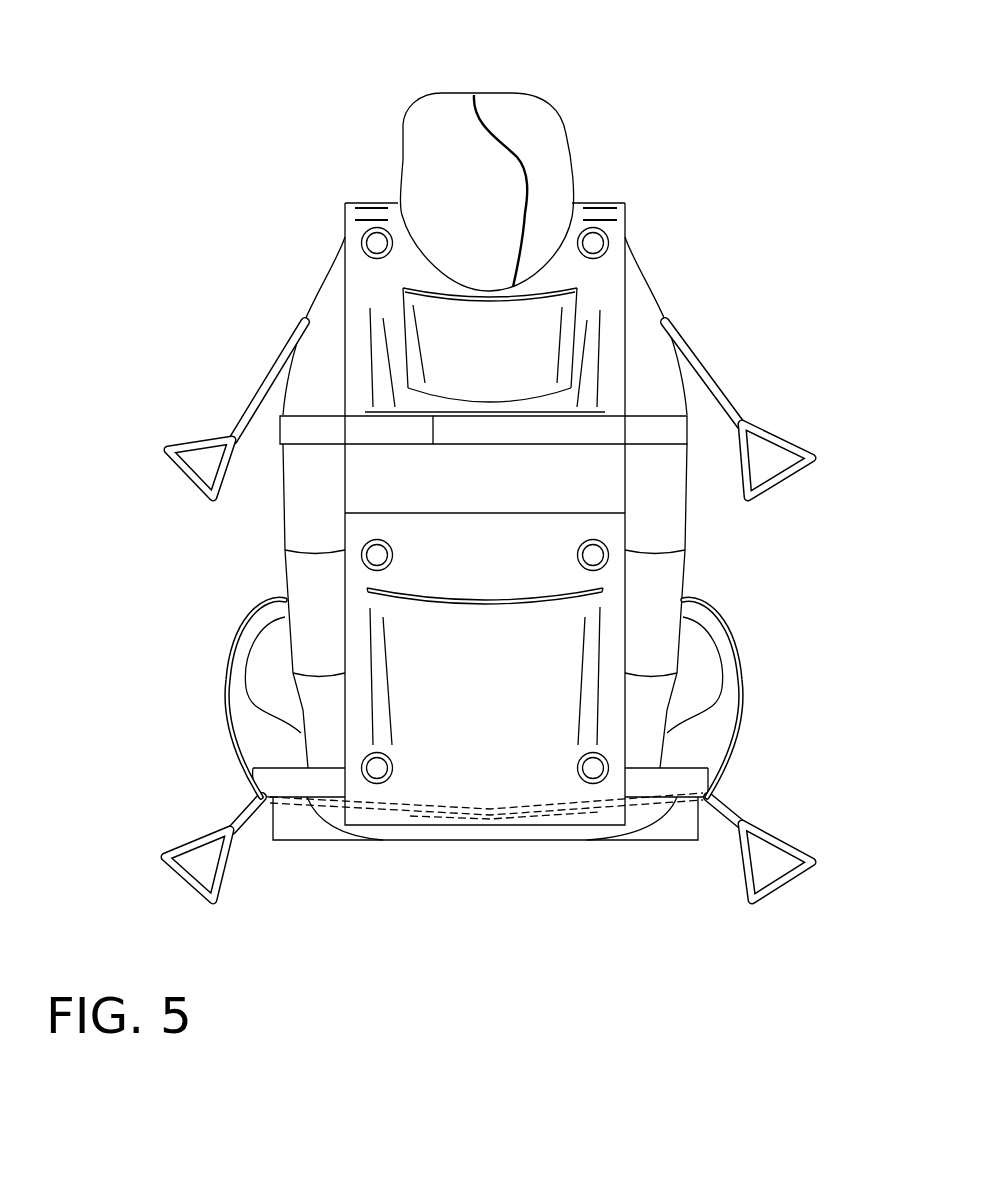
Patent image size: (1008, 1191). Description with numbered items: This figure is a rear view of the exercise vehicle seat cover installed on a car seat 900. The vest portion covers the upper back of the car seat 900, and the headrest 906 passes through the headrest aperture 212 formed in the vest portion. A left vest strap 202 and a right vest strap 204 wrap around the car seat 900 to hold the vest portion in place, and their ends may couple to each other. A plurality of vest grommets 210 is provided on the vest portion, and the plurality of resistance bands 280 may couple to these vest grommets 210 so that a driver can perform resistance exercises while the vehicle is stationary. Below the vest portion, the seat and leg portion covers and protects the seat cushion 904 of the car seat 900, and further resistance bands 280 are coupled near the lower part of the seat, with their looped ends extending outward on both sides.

The left vest strap 202 is at (318, 423).
The right vest strap 204 is at (568, 435).
The vest grommets 210 is at (593, 248).
The headrest aperture 212 is at (474, 95).
The resistance bands 280 is at (720, 398).
The car seat 900 is at (687, 498).
The seat cushion 904 is at (697, 660).
The headrest 906 is at (553, 118).